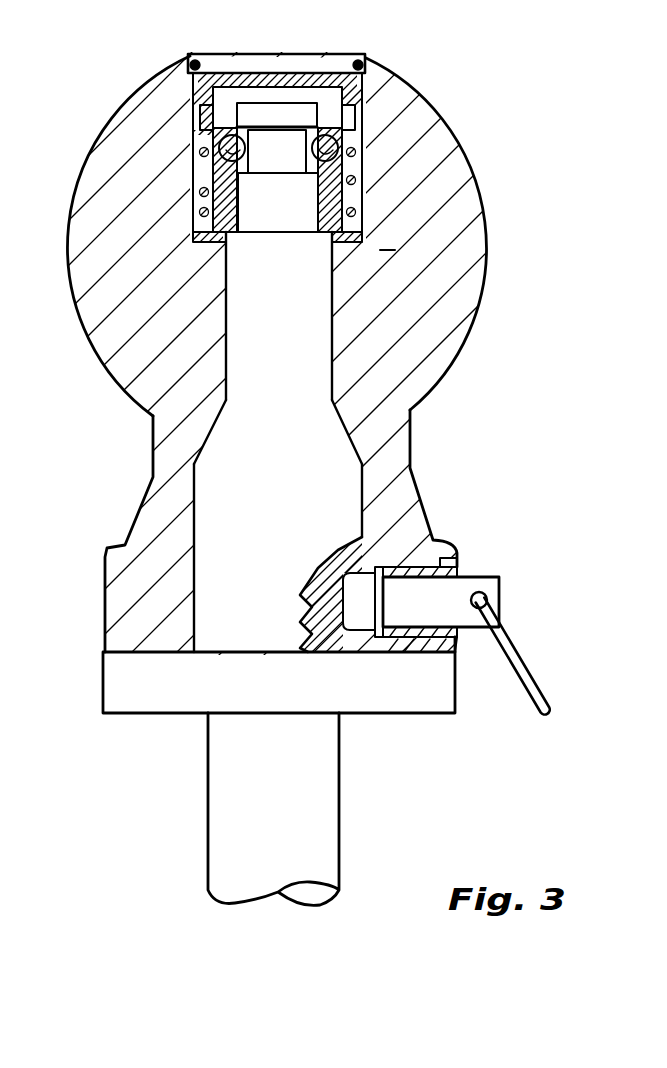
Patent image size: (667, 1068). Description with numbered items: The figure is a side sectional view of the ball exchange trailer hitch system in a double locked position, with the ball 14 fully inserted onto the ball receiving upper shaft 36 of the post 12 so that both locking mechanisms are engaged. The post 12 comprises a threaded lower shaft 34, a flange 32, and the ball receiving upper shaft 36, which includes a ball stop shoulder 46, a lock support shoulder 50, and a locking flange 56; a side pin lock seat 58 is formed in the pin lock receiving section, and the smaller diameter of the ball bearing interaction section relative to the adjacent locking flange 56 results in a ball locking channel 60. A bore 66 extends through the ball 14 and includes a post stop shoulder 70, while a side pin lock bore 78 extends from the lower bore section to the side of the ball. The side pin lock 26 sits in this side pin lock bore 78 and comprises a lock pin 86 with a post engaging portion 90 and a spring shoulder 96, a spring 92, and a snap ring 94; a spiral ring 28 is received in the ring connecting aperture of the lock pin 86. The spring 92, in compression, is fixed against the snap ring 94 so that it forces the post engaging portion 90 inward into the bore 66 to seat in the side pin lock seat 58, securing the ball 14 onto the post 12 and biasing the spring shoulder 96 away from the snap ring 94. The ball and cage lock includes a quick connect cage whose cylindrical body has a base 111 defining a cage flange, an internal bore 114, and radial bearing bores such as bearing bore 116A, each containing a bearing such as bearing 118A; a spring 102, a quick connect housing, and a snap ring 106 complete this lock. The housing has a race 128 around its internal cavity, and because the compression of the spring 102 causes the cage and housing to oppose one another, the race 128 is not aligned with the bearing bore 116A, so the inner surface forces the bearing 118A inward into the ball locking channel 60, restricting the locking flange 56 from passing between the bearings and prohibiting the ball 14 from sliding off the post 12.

The post 12 is at (244, 778).
The ball 14 is at (443, 110).
The side pin lock 26 is at (373, 628).
The spiral ring 28 is at (524, 666).
The flange 32 is at (103, 683).
The threaded lower shaft 34 is at (275, 832).
The ball receiving upper shaft 36 is at (292, 348).
The ball stop shoulder 46 is at (358, 431).
The lock support shoulder 50 is at (360, 177).
The locking flange 56 is at (292, 118).
The side pin lock seat 58 is at (330, 640).
The ball locking channel 60 is at (263, 125).
The bore 66 is at (395, 250).
The post stop shoulder 70 is at (334, 420).
The side pin lock bore 78 is at (400, 638).
The lock pin 86 is at (440, 613).
The post engaging portion 90 is at (363, 650).
The spring 92 is at (412, 565).
The snap ring 94 is at (452, 562).
The spring shoulder 96 is at (382, 648).
The spring 102 is at (198, 194).
The snap ring 106 is at (366, 63).
The base 111 is at (189, 229).
The internal bore 114 is at (205, 151).
The bearing bore 116A is at (197, 140).
The bearing 118A is at (222, 144).
The race 128 is at (193, 137).